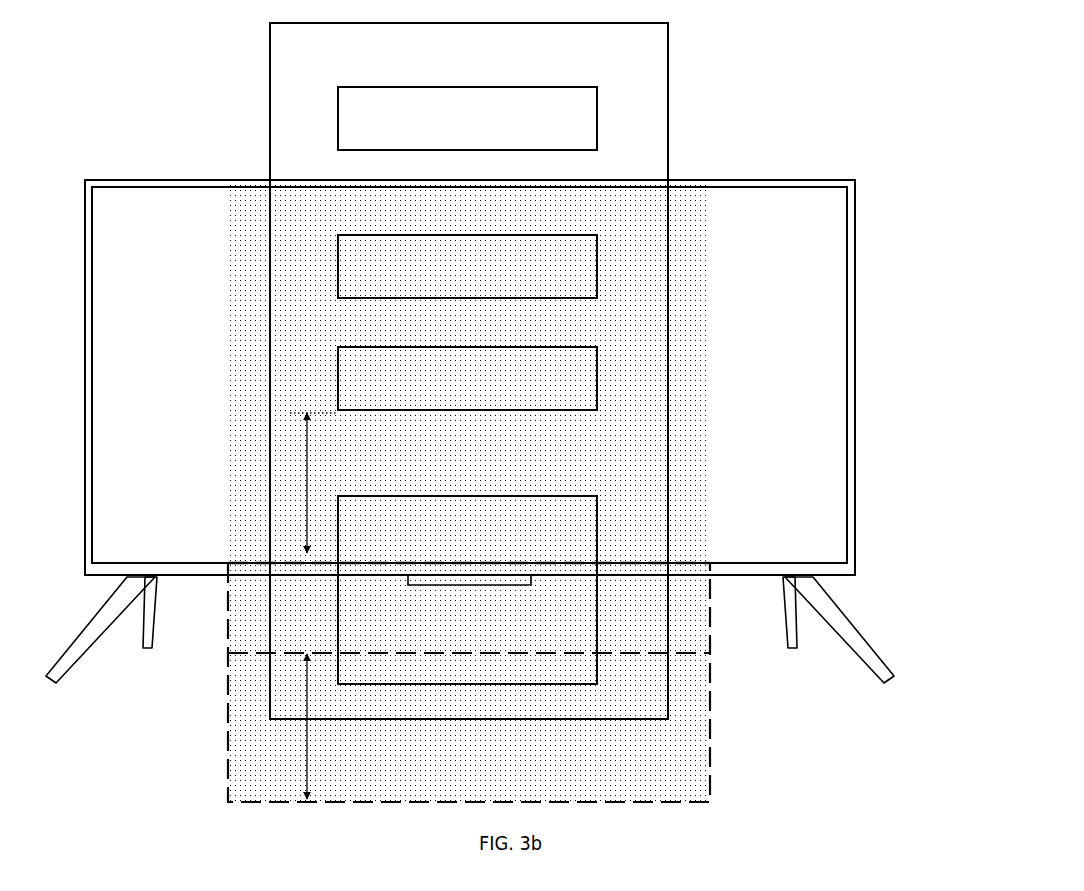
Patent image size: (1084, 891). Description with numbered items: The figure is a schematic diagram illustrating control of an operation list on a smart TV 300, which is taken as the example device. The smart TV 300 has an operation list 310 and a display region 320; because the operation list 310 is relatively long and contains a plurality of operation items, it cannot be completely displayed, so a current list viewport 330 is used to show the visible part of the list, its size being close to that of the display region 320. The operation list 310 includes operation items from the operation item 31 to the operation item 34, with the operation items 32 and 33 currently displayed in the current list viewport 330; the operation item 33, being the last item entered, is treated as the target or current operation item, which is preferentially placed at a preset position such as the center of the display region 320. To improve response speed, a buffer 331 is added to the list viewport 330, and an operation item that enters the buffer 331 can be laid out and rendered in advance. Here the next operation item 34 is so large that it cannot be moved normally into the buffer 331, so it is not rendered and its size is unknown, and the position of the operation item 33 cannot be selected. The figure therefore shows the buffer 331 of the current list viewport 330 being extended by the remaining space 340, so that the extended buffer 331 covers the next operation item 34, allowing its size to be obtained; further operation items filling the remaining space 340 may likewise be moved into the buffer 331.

The smart TV 300 is at (856, 317).
The operation list 310 is at (469, 371).
The display region 320 is at (784, 255).
The current list viewport 330 is at (688, 207).
The buffer 331 is at (283, 632).
The remaining space 340 is at (301, 606).
The operation item 31 is at (467, 118).
The operation item 32 is at (467, 266).
The operation item 33 is at (467, 378).
The next operation item 34 is at (467, 590).